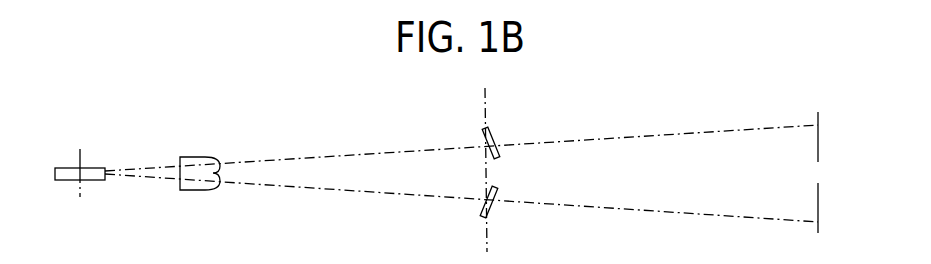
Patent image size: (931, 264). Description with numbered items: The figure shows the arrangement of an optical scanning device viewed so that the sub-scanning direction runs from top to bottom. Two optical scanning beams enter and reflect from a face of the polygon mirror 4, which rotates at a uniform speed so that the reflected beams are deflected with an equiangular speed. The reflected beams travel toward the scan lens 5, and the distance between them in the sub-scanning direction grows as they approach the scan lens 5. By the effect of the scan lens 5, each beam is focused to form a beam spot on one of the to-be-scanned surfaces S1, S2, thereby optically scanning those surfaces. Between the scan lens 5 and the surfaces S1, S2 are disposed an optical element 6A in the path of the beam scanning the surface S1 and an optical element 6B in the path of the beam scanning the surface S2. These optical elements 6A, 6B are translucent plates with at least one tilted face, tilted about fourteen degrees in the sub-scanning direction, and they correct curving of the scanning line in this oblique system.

The polygon mirror 4 is at (95, 167).
The scan lens 5 is at (196, 156).
The optical element 6A is at (495, 208).
The optical element 6B is at (497, 140).
The surface S1 is at (818, 207).
The surface S2 is at (818, 138).